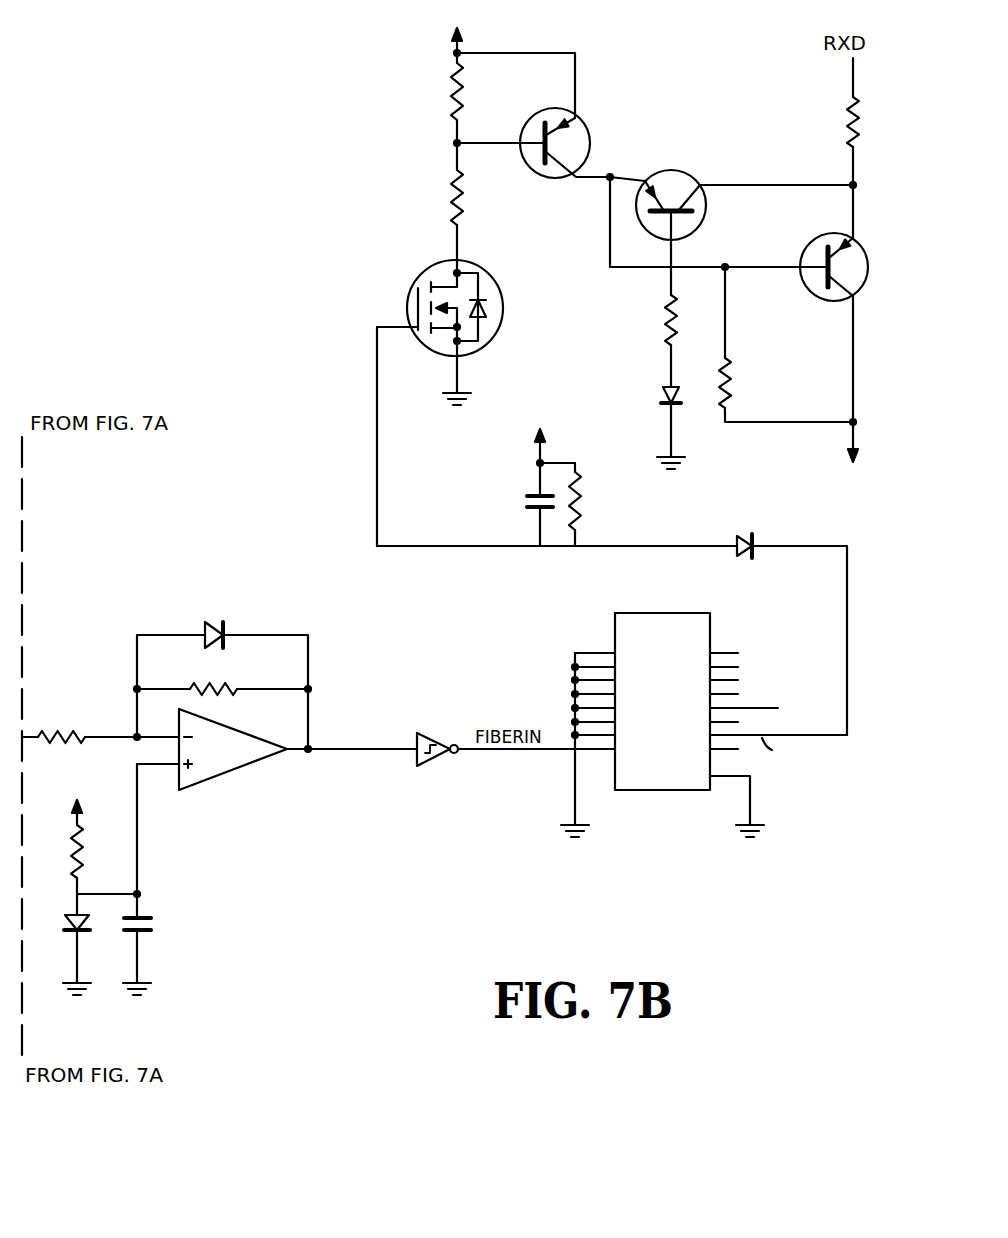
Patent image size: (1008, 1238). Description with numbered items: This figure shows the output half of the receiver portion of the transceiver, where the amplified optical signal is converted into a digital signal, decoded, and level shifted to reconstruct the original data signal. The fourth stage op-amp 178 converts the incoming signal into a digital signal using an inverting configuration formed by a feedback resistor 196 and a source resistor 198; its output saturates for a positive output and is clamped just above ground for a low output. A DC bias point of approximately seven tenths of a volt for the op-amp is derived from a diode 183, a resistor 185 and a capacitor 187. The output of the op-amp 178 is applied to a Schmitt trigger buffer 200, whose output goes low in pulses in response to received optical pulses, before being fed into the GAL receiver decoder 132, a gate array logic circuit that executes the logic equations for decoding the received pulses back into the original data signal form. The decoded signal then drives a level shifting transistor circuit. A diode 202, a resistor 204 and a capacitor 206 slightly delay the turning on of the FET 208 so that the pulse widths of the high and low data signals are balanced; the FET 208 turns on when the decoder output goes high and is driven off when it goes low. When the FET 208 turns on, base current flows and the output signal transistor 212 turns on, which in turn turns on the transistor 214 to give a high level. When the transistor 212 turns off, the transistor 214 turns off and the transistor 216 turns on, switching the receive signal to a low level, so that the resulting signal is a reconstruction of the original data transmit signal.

The output signal transistor 212 is at (590, 143).
The transistor 214 is at (705, 218).
The transistor 216 is at (818, 300).
The FET 208 is at (497, 332).
The capacitor 206 is at (523, 497).
The resistor 204 is at (584, 507).
The diode 202 is at (755, 532).
The source resistor 198 is at (60, 735).
The feedback resistor 196 is at (237, 689).
The fourth stage op-amp 178 is at (235, 757).
The Schmitt trigger buffer 200 is at (432, 757).
The resistor 185 is at (84, 850).
The capacitor 187 is at (152, 924).
The diode 183 is at (64, 936).
The GAL receiver decoder 132 is at (660, 777).